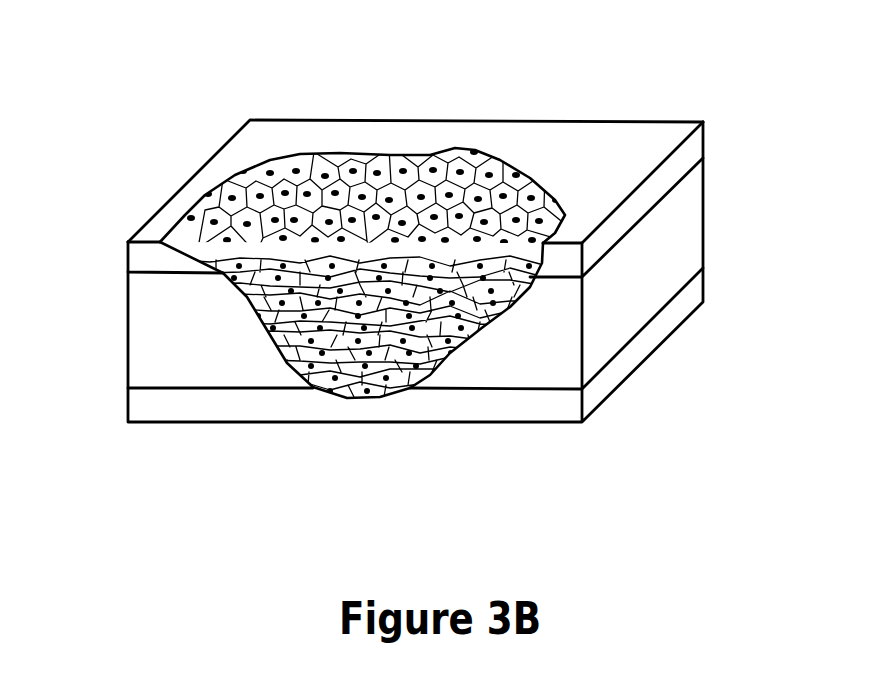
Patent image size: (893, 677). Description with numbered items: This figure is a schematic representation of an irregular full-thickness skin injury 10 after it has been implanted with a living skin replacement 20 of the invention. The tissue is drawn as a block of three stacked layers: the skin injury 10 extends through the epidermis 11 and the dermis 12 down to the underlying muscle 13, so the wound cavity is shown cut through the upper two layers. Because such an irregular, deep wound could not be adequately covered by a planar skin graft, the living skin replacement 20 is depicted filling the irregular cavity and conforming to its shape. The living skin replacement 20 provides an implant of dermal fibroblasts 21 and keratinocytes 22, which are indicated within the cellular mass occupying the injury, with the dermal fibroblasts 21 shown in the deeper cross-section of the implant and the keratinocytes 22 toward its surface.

The full-thickness skin injury 10 is at (300, 150).
The epidermis 11 is at (133, 238).
The dermis 12 is at (142, 332).
The muscle 13 is at (155, 412).
The living skin replacement 20 is at (422, 165).
The dermal fibroblasts 21 is at (405, 372).
The keratinocytes 22 is at (562, 203).